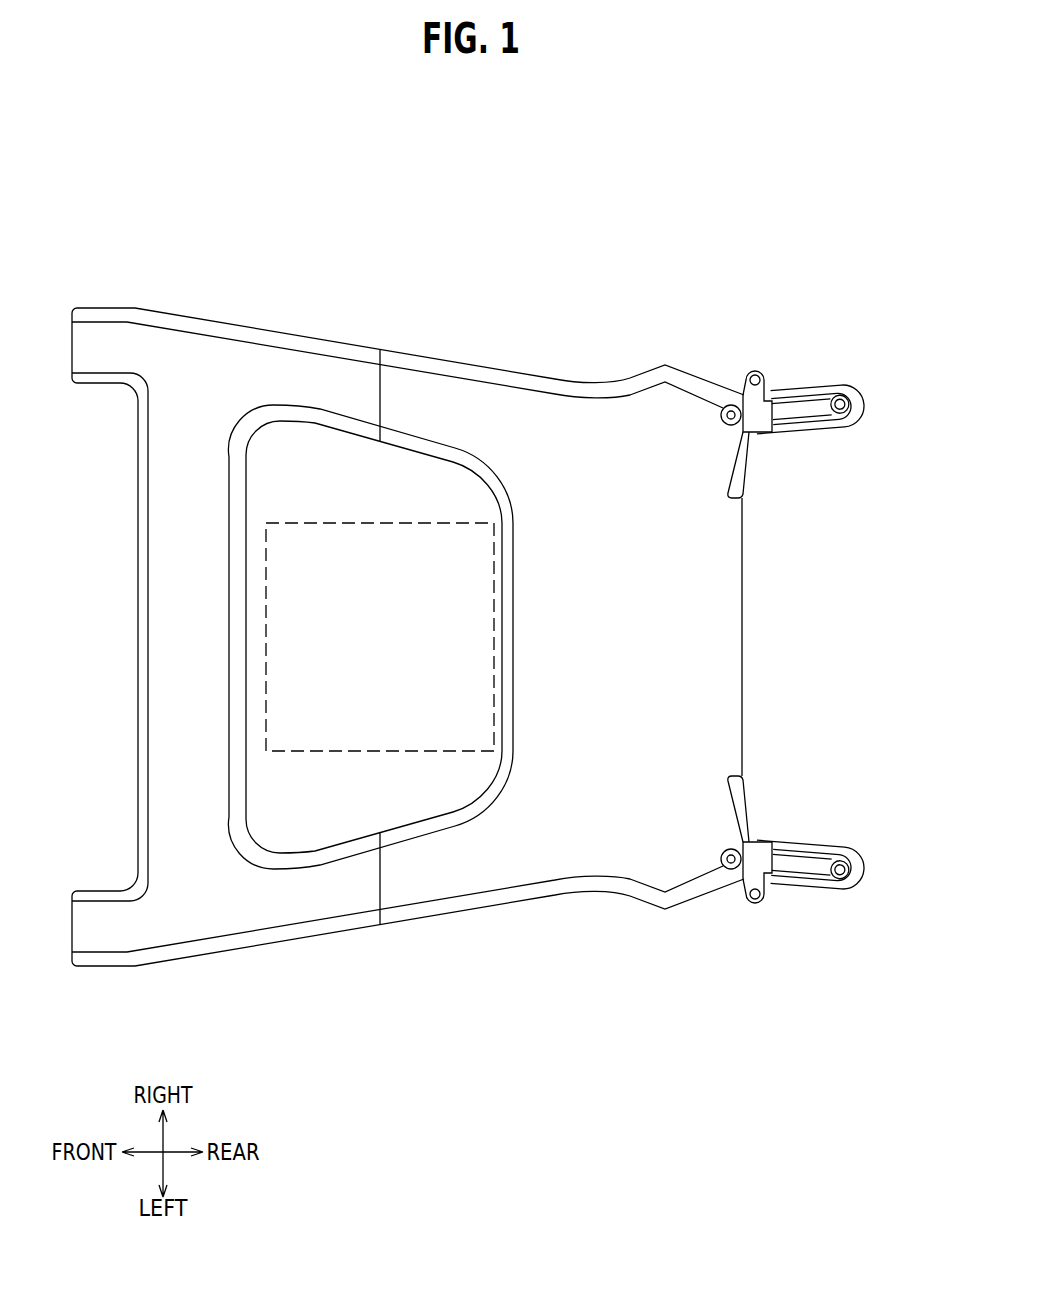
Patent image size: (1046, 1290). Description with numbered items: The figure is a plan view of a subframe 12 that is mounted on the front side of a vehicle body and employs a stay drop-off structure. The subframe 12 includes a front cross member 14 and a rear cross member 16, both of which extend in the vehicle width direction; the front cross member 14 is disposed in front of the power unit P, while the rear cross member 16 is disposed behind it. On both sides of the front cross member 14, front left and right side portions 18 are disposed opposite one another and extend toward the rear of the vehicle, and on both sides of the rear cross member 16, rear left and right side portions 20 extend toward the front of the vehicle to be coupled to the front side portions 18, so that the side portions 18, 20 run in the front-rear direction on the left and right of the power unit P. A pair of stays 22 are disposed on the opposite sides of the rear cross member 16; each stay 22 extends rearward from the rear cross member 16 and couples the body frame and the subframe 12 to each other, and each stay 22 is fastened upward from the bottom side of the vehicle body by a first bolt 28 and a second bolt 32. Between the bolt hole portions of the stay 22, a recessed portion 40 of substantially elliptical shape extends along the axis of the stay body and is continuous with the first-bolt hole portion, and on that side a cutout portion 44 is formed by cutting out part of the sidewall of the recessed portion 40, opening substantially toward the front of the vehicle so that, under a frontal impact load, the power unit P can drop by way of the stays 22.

The subframe 12 is at (557, 301).
The front cross member 14 is at (116, 645).
The rear cross member 16 is at (767, 640).
The front left and right side portions 18 is at (264, 330).
The rear left and right side portions 20 is at (427, 357).
The stay 22 is at (808, 355).
The first bolt 28 is at (845, 392).
The second bolt 32 is at (721, 424).
The recessed portion 40 is at (796, 410).
The cutout portion 44 is at (832, 424).